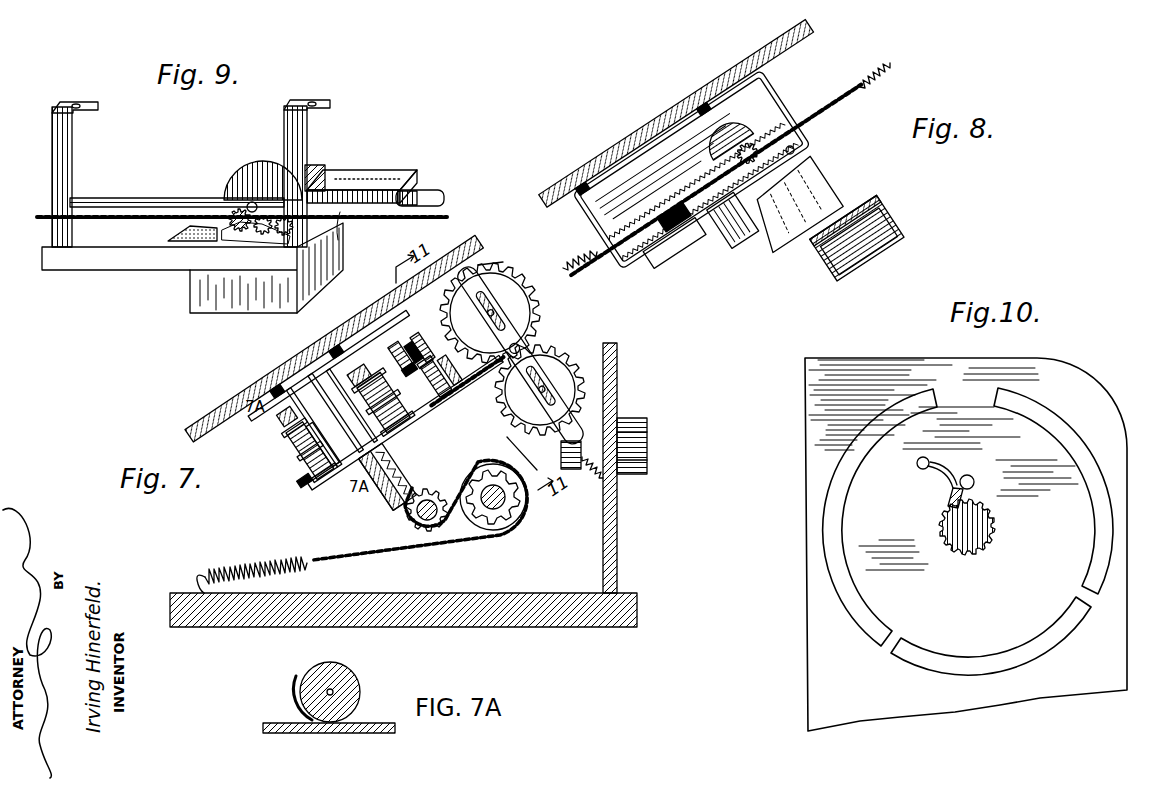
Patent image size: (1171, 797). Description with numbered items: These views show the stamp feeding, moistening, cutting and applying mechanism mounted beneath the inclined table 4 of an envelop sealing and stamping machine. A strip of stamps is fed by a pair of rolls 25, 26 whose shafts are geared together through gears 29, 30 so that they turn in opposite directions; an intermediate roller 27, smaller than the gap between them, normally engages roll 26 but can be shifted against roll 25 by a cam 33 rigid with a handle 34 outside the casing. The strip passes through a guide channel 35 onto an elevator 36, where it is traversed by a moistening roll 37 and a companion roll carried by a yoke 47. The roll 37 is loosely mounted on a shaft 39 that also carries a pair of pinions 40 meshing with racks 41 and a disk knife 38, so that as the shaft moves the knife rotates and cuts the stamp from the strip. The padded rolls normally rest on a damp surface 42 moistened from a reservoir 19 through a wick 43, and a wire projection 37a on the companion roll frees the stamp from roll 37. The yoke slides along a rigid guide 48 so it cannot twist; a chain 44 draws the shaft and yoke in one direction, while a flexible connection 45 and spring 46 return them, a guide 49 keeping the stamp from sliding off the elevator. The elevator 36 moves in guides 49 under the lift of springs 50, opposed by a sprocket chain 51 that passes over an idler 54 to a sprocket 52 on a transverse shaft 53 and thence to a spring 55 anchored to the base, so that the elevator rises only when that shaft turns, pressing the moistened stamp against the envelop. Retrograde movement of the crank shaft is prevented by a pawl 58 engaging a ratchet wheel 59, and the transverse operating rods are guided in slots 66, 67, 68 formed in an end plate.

In FIG. 8, the inclined table 4 is at (676, 114).
In FIG. 7, the inclined table 4 is at (334, 338).
In FIG. 8, the reservoir 19 is at (857, 238).
In FIG. 7, the roll 25 is at (513, 305).
In FIG. 7, the roll 26 is at (570, 392).
In FIG. 7, the intermediate roller 27 is at (520, 355).
In FIG. 7, the gear 29 is at (505, 273).
In FIG. 7, the gear 30 is at (515, 349).
In FIG. 7, the cam 33 is at (572, 470).
In FIG. 7, the handle 34 is at (647, 452).
In FIG. 8, the guide channel 35 is at (669, 234).
In FIG. 7, the guide channel 35 is at (467, 381).
In FIG. 7, the elevator 36 is at (406, 422).
In FIG. 7A, the elevator 36 is at (357, 734).
In FIG. 9, the moistening roll 37 is at (262, 179).
In FIG. 7, the moistening roll 37 is at (348, 415).
In FIG. 7A, the moistening roll 37 is at (350, 678).
In FIG. 7, the wire projection 37a is at (305, 480).
In FIG. 7A, the wire projection 37a is at (294, 694).
In FIG. 9, the knife 38 is at (250, 199).
In FIG. 8, the knife 38 is at (726, 137).
In FIG. 7, the knife 38 is at (383, 402).
In FIG. 7, the shaft 39 is at (418, 350).
In FIG. 9, the pinions 40 is at (240, 212).
In FIG. 8, the pinions 40 is at (747, 154).
In FIG. 7, the pinions 40 is at (402, 359).
In FIG. 9, the racks 41 is at (227, 237).
In FIG. 8, the racks 41 is at (805, 146).
In FIG. 7, the racks 41 is at (435, 377).
In FIG. 9, the damp surface 42 is at (178, 233).
In FIG. 8, the damp surface 42 is at (733, 220).
In FIG. 8, the wick 43 is at (791, 204).
In FIG. 8, the chain 44 is at (599, 258).
In FIG. 7, the chain 44 is at (449, 370).
In FIG. 8, the flexible connection 45 is at (716, 180).
In FIG. 8, the spring 46 is at (890, 65).
In FIG. 9, the yoke 47 is at (343, 179).
In FIG. 7, the yoke 47 is at (310, 450).
In FIG. 9, the rigid guide 48 is at (430, 190).
In FIG. 7, the guide 49 is at (286, 416).
In FIG. 7, the springs 50 is at (388, 476).
In FIG. 7, the flexible connection 51 is at (420, 515).
In FIG. 7, the sprocket 52 is at (500, 531).
In FIG. 7, the shaft 53 is at (503, 497).
In FIG. 7, the idler 54 is at (440, 530).
In FIG. 7, the spring 55 is at (252, 566).
In FIG. 10, the dog or pawl 58 is at (947, 500).
In FIG. 10, the ratchet wheel 59 is at (995, 535).
In FIG. 10, the slot 66 is at (828, 545).
In FIG. 10, the slot 67 is at (966, 664).
In FIG. 10, the slot 68 is at (1100, 526).